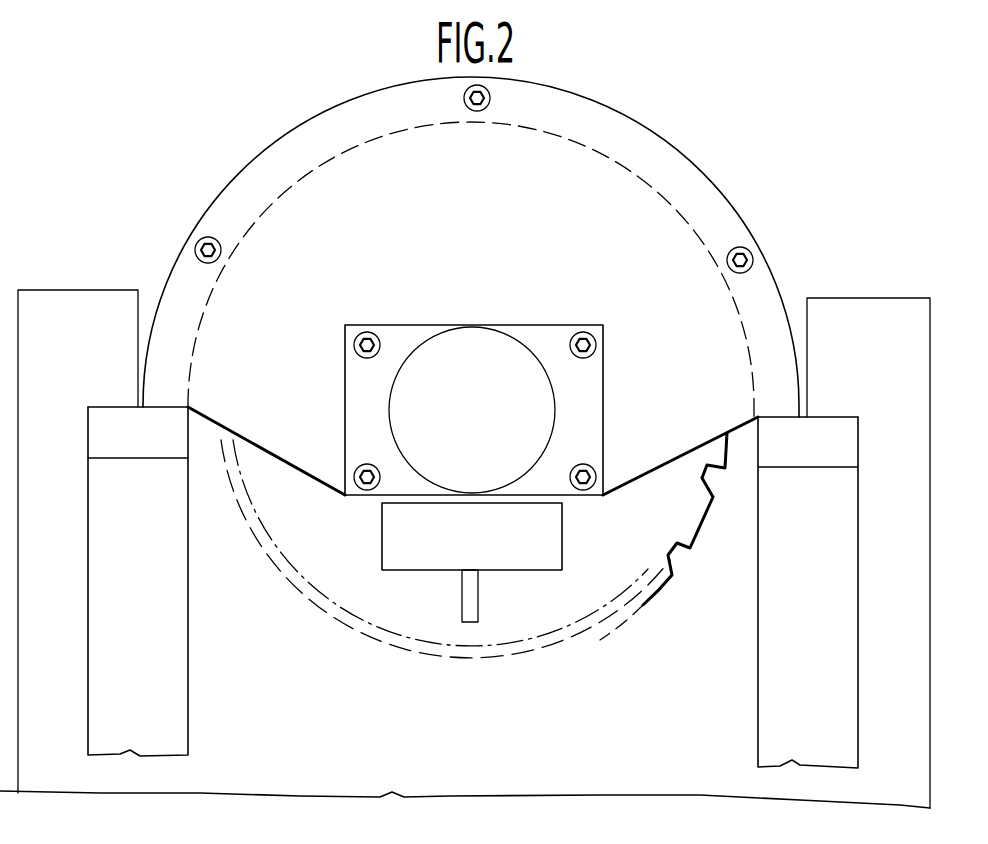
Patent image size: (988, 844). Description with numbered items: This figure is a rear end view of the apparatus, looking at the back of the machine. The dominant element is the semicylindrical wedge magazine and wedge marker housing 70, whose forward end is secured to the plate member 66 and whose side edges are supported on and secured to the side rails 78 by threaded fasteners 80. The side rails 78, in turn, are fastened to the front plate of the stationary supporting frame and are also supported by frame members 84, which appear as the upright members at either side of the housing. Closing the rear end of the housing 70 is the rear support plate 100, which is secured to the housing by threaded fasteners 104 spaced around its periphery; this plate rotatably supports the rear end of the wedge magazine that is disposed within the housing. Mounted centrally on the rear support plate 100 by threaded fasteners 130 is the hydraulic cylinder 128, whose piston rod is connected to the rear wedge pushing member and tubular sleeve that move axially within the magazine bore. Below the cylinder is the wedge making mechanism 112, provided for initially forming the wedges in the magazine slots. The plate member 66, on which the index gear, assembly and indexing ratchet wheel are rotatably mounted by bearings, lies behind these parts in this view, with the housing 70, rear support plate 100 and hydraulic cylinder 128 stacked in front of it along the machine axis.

The wedge magazine and wedge marker housing 70 is at (673, 147).
The rear support plate 100 is at (578, 231).
The threaded fasteners 104 is at (752, 256).
The side rails 78 is at (96, 430).
The frame members 84 is at (100, 657).
The plate member 66 is at (500, 716).
The hydraulic cylinder 128 is at (483, 405).
The threaded fasteners 130 is at (586, 332).
The wedge making mechanism 112 is at (562, 538).
The threaded fasteners 80 is at (688, 778).